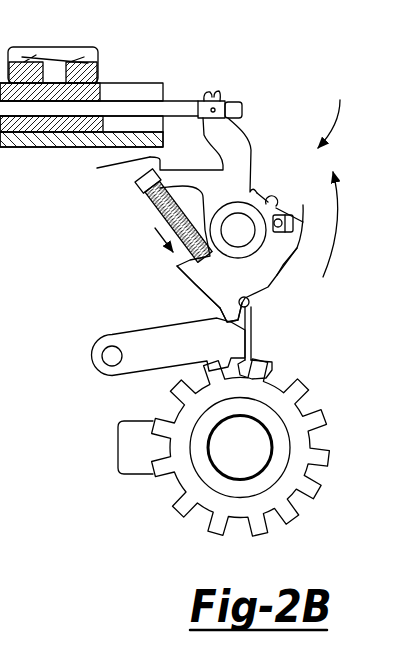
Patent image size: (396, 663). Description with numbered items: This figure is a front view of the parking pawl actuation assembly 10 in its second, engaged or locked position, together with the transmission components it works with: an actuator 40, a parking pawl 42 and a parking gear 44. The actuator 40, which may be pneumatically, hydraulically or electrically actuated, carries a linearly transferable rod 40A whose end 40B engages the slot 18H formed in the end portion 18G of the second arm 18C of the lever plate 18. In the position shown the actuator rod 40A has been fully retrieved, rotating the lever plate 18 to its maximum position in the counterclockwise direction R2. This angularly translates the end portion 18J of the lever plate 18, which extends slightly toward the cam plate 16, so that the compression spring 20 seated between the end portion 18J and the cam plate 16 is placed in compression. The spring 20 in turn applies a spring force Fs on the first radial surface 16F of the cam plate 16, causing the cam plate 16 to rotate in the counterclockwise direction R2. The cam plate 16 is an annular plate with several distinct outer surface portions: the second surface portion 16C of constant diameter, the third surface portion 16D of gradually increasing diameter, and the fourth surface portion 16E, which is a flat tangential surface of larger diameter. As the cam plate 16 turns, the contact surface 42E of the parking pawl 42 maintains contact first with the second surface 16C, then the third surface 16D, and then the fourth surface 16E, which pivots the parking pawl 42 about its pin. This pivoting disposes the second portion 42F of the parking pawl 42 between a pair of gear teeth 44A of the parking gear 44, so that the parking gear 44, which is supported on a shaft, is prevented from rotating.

The parking pawl actuation assembly 10 is at (335, 109).
The cam plate 16 is at (303, 205).
The second surface portion 16C is at (250, 294).
The third surface portion 16D is at (250, 299).
The fourth surface portion 16E is at (227, 321).
The first radial surface 16F is at (177, 266).
The lever plate 18 is at (188, 170).
The second arm 18C is at (248, 130).
The end portion 18G is at (211, 91).
The slot 18H is at (220, 94).
The end portion 18J is at (106, 167).
The compression spring 20 is at (144, 199).
The actuator 40 is at (139, 83).
The rod 40A is at (177, 99).
The end 40B is at (238, 92).
The parking pawl 42 is at (122, 332).
The contact surface 42E is at (252, 302).
The second portion 42F is at (273, 376).
The parking gear 44 is at (326, 418).
The gear teeth 44A is at (130, 447).
The counterclockwise direction R2 is at (345, 224).
The spring force Fs is at (155, 226).